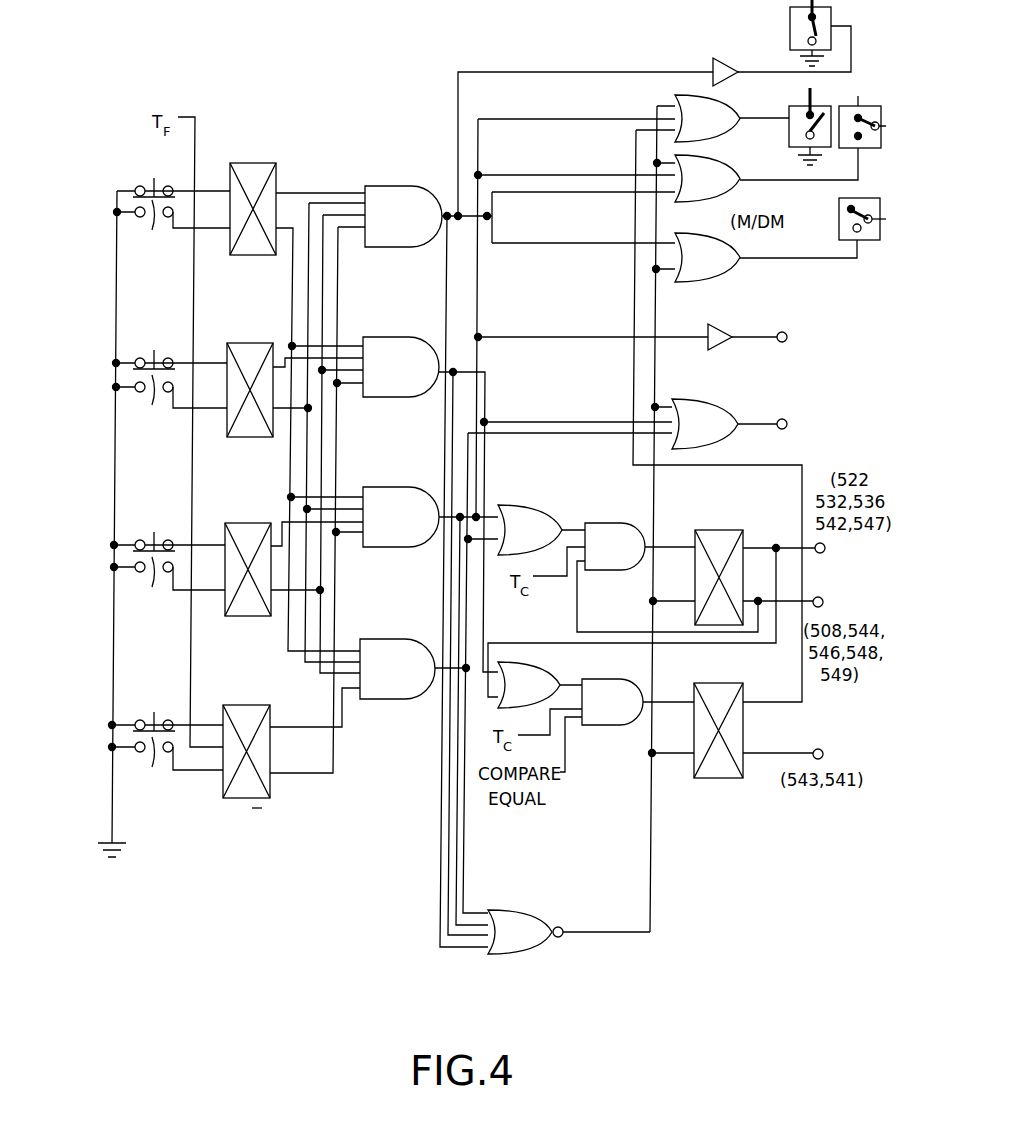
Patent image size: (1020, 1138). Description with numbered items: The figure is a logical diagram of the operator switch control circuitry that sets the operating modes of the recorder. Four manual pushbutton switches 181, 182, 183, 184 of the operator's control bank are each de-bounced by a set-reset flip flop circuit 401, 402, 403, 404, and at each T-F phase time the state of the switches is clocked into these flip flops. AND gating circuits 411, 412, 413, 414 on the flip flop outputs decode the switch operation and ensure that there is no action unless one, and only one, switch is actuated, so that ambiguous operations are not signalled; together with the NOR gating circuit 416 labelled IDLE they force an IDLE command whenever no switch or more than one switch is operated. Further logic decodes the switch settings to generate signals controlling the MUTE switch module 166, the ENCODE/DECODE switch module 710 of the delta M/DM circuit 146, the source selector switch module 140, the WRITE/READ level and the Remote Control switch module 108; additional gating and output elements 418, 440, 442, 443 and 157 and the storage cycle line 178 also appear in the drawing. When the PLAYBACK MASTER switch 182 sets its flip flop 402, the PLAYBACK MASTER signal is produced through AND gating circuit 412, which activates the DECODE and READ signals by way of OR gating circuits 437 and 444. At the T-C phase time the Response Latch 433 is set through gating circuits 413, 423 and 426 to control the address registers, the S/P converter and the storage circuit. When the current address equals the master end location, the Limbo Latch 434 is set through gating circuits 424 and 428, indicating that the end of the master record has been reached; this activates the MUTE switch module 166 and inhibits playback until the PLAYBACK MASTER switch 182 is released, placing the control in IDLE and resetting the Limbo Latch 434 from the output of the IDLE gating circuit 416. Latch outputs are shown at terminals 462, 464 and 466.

The pushbutton switch 181 is at (172, 218).
The pushbutton switch 182 is at (170, 395).
The pushbutton switch 183 is at (168, 580).
The pushbutton switch 184 is at (166, 762).
The set-reset flip flop circuit 401 is at (266, 165).
The set-reset flip flop circuit 402 is at (264, 345).
The set-reset flip flop circuit 403 is at (262, 525).
The set-reset flip flop circuit 404 is at (260, 707).
The AND gating circuit 411 is at (415, 186).
The AND gating circuit 412 is at (415, 337).
The AND gating circuit 413 is at (415, 487).
The AND gating circuit 414 is at (412, 639).
The NOR gating circuit 416 is at (710, 62).
The Remote Control switch module 108 is at (789, 31).
The OR gate 418 is at (725, 110).
The MUTE switch module 166 is at (795, 140).
The ENCODE/DECODE switch module 710 is at (886, 106).
The OR gating circuit 437 is at (729, 188).
The switch 157 is at (838, 214).
The delta modulator/demodulator circuit 146 is at (809, 240).
The selector switch module 140 is at (870, 244).
The OR gate 440 is at (729, 270).
The inverter 442 is at (716, 324).
The output terminal 443 is at (787, 333).
The OR gating circuit 444 is at (728, 399).
The storage cycle line 178 is at (786, 420).
The logical gating circuit 423 is at (547, 505).
The logical gating circuit 426 is at (630, 523).
The Response Latch 433 is at (735, 530).
The output terminal 462 is at (821, 553).
The output terminal 464 is at (822, 599).
The logical gating circuit 424 is at (548, 672).
The logical gating circuit 428 is at (605, 717).
The Limbo Latch 434 is at (740, 683).
The output terminal 466 is at (818, 749).